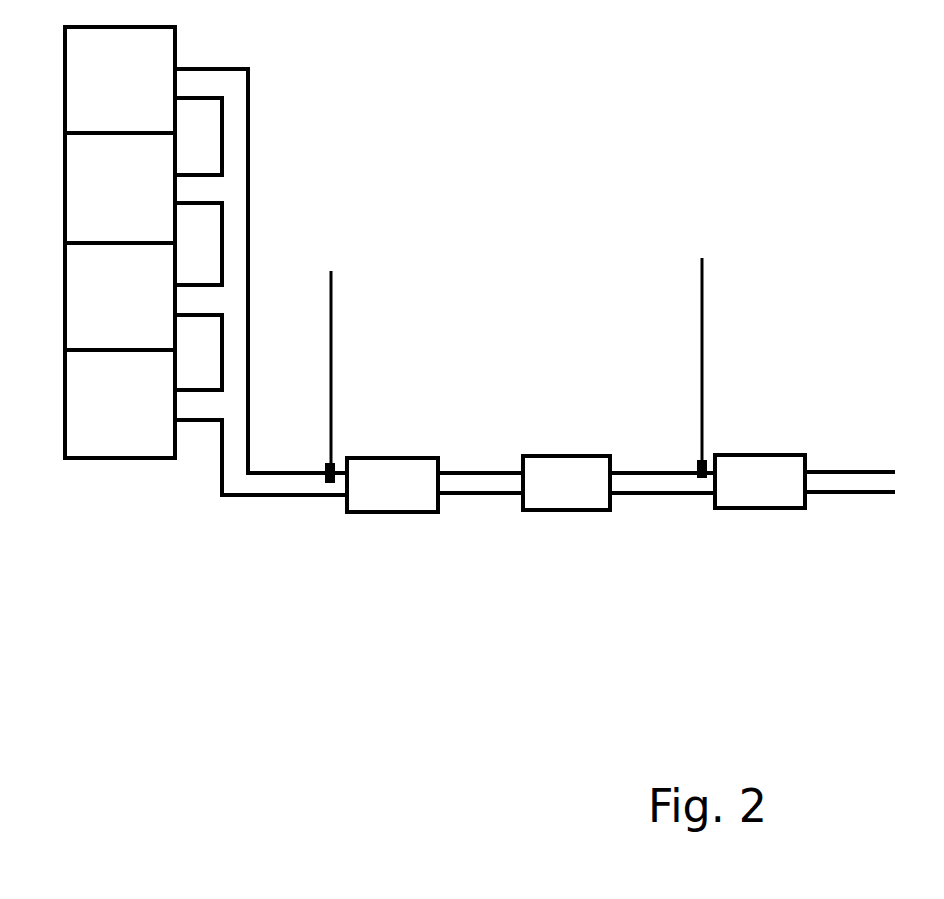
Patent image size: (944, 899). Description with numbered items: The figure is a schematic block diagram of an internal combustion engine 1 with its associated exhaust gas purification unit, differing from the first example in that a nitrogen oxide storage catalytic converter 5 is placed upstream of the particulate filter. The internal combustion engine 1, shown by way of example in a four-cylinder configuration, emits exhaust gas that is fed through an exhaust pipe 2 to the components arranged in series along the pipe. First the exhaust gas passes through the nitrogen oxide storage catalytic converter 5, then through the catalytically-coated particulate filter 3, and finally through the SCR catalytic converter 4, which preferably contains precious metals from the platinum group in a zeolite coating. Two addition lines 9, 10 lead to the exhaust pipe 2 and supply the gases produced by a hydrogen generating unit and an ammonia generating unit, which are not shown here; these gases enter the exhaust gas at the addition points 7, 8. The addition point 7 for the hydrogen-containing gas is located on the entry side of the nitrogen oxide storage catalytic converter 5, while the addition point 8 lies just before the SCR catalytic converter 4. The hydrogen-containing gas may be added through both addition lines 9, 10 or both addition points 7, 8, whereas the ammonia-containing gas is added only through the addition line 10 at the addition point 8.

The internal combustion engine 1 is at (85, 193).
The exhaust pipe 2 is at (240, 487).
The particulate filter 3 is at (590, 512).
The SCR catalytic converter 4 is at (777, 495).
The nitrogen oxide storage catalytic converter 5 is at (397, 502).
The addition point 7 is at (323, 465).
The addition point 8 is at (708, 457).
The addition line 9 is at (331, 305).
The addition line 10 is at (702, 277).